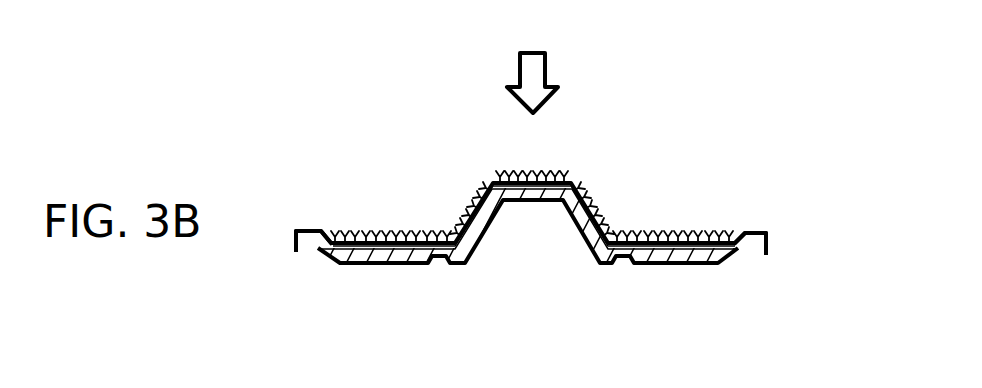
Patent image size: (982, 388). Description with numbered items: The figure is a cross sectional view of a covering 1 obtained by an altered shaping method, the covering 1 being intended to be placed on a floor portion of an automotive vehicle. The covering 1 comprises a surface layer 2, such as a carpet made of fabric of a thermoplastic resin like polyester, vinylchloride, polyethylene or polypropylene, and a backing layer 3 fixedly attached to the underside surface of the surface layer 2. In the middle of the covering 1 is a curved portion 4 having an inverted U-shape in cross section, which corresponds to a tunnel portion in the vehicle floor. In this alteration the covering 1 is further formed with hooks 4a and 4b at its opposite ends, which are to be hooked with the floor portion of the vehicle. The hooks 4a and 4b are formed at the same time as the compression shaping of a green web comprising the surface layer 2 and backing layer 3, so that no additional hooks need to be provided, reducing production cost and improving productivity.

The covering 1 is at (549, 227).
The surface layer 2 is at (668, 233).
The backing layer 3 is at (693, 265).
The curved portion 4 is at (544, 171).
The hook 4a is at (313, 256).
The hook 4b is at (751, 251).